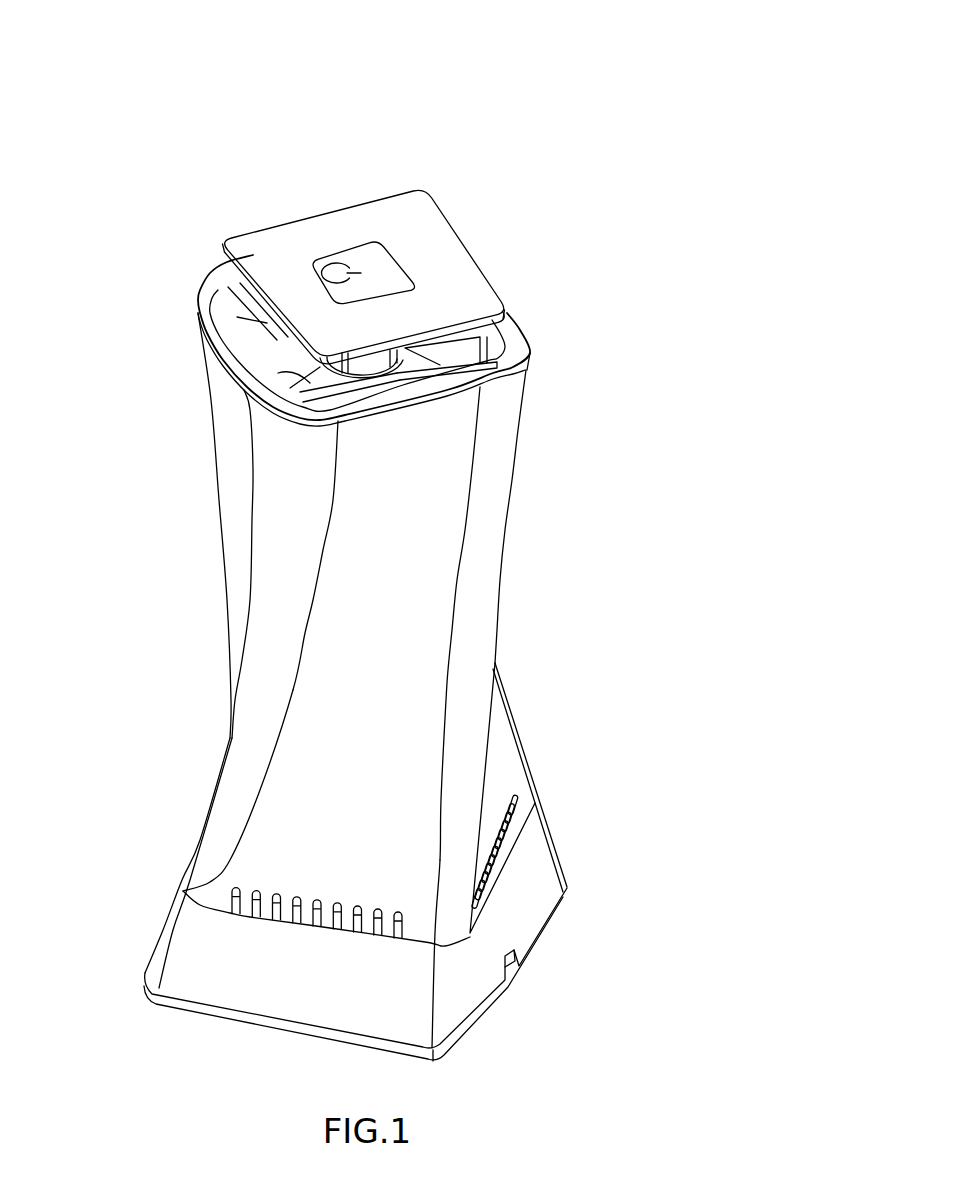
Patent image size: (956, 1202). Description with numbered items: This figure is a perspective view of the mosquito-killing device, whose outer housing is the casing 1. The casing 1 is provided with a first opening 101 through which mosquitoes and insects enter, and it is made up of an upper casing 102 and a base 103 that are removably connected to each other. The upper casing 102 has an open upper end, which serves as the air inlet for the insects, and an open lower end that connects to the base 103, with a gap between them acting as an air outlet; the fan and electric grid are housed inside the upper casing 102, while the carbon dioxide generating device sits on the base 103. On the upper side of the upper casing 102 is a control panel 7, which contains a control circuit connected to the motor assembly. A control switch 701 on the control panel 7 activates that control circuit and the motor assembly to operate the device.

The casing 1 is at (522, 603).
The control panel 7 is at (288, 237).
The control switch 701 is at (387, 258).
The first opening 101 is at (485, 338).
The upper casing 102 is at (263, 622).
The base 103 is at (216, 943).